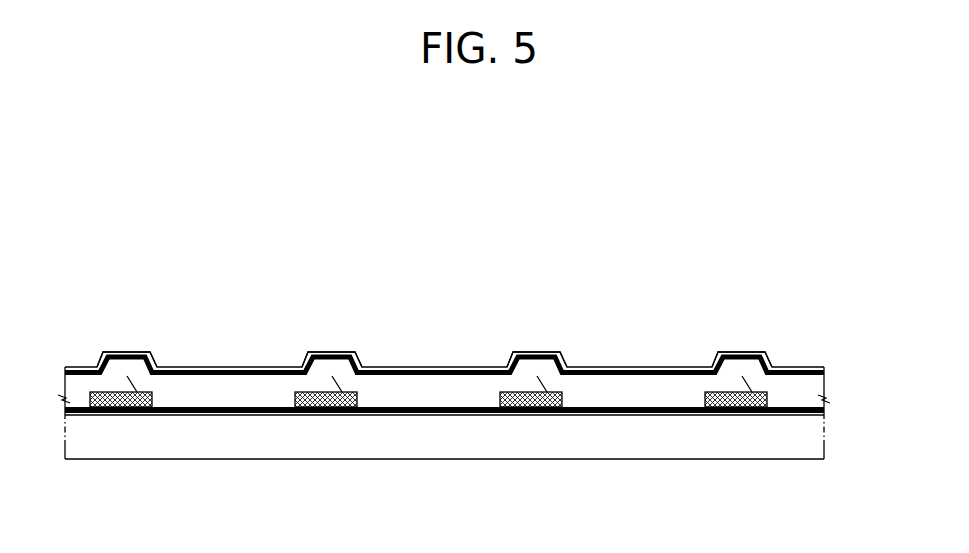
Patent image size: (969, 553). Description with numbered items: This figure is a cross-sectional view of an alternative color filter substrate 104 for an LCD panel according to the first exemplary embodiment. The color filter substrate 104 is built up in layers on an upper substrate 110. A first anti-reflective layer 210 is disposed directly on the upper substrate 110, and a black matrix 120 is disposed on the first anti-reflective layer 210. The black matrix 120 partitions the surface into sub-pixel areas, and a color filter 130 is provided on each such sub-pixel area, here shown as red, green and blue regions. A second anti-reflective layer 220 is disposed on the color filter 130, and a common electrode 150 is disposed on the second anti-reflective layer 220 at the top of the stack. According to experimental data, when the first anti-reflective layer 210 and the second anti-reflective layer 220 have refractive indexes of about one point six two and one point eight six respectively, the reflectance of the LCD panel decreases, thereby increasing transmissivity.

The color filter substrate 104 is at (838, 370).
The upper substrate 110 is at (447, 453).
The black matrix 120 is at (530, 408).
The color filter 130 is at (610, 403).
The common electrode 150 is at (287, 367).
The first anti-reflective layer 210 is at (202, 413).
The second anti-reflective layer 220 is at (363, 374).